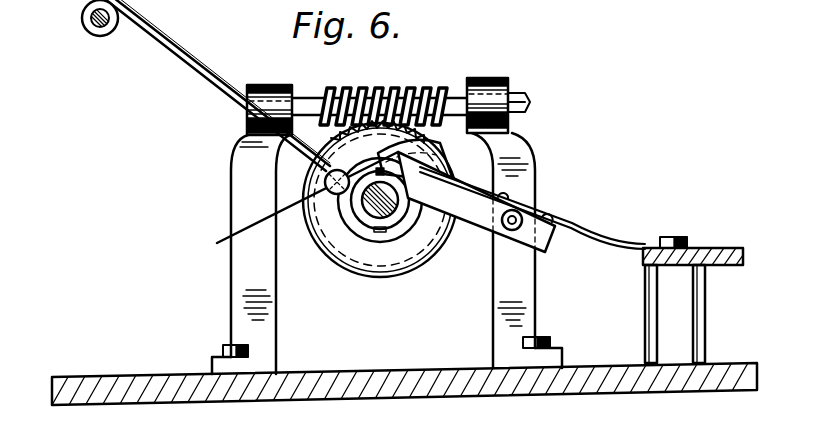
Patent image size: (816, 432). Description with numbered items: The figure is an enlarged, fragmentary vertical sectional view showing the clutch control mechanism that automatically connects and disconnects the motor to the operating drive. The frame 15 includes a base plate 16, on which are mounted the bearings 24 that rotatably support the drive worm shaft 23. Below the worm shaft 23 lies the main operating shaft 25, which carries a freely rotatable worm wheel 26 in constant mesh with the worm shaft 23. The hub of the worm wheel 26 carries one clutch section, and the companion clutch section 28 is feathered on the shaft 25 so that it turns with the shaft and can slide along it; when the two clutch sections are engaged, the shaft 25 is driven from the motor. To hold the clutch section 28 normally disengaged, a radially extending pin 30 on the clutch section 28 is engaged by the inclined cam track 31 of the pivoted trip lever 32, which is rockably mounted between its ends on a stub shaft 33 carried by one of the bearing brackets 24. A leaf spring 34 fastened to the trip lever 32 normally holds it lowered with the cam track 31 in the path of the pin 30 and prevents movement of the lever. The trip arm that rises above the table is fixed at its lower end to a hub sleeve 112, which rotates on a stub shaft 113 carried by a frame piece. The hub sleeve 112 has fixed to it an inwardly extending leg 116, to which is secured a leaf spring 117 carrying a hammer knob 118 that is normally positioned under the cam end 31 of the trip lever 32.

The frame 15 is at (655, 387).
The base plate 16 is at (408, 388).
The drive worm shaft 23 is at (425, 88).
The bearings 24 is at (247, 283).
The main operating shaft 25 is at (368, 228).
The worm wheel 26 is at (400, 262).
The clutch section 28 is at (442, 241).
The pin 30 is at (405, 148).
The inclined cam track 31 is at (292, 205).
The trip lever 32 is at (453, 191).
The stub shaft 33 is at (522, 212).
The leaf spring 34 is at (588, 230).
The hub sleeve 112 is at (97, 37).
The stub shaft 113 is at (80, 24).
The leg 116 is at (150, 34).
The leaf spring 117 is at (205, 66).
The hammer knob 118 is at (328, 190).